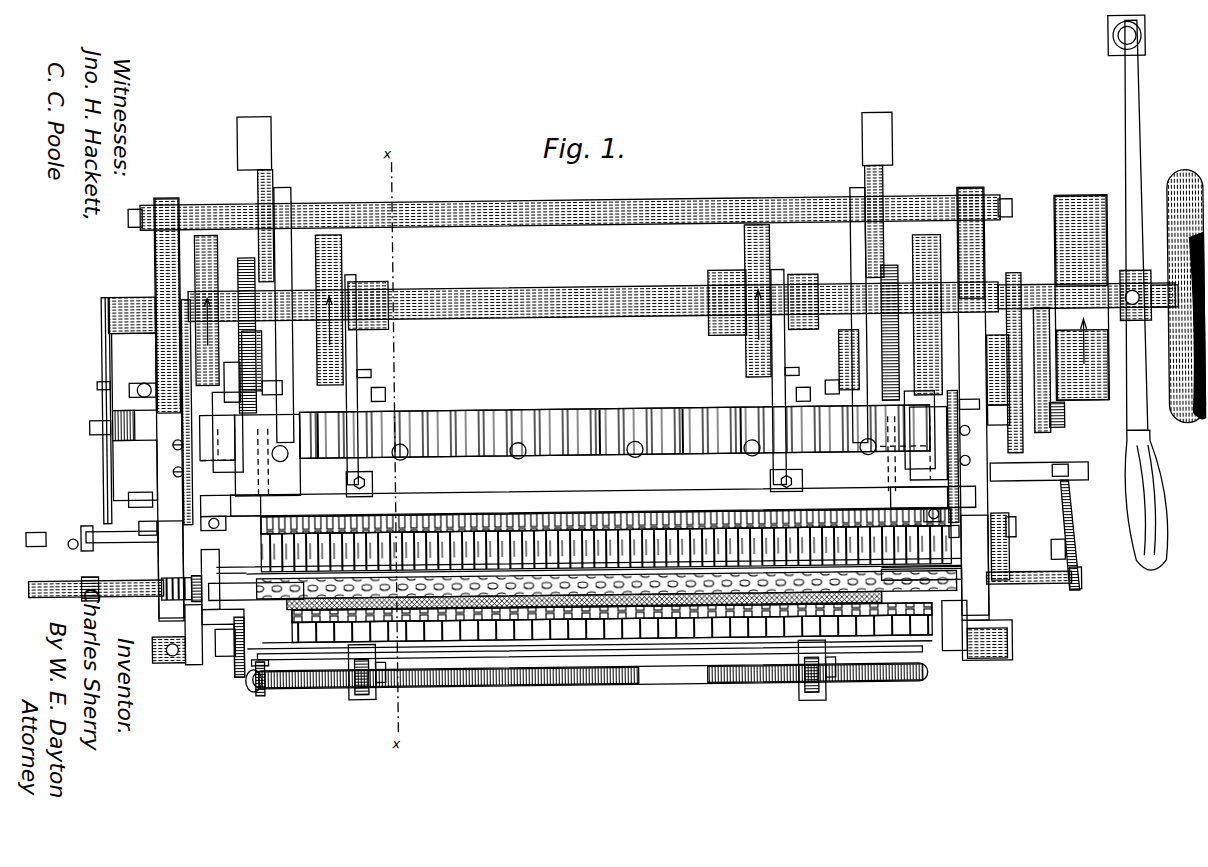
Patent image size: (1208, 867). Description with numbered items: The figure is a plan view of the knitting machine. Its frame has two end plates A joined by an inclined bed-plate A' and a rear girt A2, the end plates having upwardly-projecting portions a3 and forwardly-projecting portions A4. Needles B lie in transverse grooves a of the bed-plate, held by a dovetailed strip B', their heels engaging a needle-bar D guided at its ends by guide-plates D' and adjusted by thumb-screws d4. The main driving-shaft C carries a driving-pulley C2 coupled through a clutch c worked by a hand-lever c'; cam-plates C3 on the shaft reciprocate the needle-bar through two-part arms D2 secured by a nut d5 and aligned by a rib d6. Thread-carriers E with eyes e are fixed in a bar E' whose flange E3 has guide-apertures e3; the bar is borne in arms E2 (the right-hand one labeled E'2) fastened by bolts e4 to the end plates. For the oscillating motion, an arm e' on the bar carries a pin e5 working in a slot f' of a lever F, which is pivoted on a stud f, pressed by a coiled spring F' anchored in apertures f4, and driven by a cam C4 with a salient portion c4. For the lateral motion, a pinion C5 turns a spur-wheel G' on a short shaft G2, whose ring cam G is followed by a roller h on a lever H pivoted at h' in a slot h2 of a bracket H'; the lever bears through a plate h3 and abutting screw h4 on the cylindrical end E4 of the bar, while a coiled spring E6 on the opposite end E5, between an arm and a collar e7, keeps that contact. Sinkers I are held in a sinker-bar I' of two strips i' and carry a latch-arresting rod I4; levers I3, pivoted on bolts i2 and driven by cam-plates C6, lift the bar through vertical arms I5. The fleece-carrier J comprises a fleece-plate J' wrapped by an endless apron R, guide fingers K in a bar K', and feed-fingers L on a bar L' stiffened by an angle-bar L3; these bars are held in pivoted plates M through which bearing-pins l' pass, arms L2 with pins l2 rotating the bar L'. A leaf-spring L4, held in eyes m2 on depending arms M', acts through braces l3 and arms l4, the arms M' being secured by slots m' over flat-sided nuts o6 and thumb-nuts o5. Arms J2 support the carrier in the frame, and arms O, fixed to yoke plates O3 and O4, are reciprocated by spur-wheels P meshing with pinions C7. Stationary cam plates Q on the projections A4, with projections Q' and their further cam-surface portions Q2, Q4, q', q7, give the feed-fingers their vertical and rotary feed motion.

The end plates A is at (571, 408).
The bed-plate A' is at (614, 414).
The girt A2 is at (600, 208).
The forwardly-projecting portions of end plates A4 is at (528, 568).
The needles B is at (658, 551).
The strip B' is at (140, 499).
The main driving-shaft C is at (542, 296).
The driving-pulley C2 is at (1081, 298).
The cam-plates C3 is at (340, 272).
The cam C4 is at (120, 292).
The pinion C5 is at (1015, 277).
The cam-plates C6 is at (216, 296).
The pinions C7 is at (248, 271).
The clutch device c is at (1131, 285).
The hand-lever c' is at (1158, 292).
The salient portion of cam c4 is at (150, 515).
The needle-bar D is at (631, 466).
The guide-plates D' is at (574, 453).
The arms D2 is at (360, 357).
The thumb-screws d4 is at (885, 464).
The nut d5 is at (386, 393).
The rib d6 is at (372, 371).
The thread-carriers E is at (588, 561).
The bar E' is at (592, 550).
The block E'2 is at (1010, 546).
The arms E2 is at (63, 559).
The flange E3 is at (587, 589).
The projecting end of bar E4 is at (1029, 586).
The opposite end of bar E5 is at (110, 590).
The coiled spring E6 is at (172, 597).
The eyes e is at (648, 549).
The arm e' is at (92, 553).
The guide-apertures e3 is at (358, 576).
The bolts e4 is at (1016, 516).
The pin e5 is at (67, 541).
The collar e7 is at (210, 568).
The lever F is at (89, 411).
The coiled spring F' is at (134, 455).
The stud f is at (89, 431).
The slot f' is at (70, 553).
The apertures f4 is at (100, 383).
The cam G is at (1040, 369).
The spur-wheel G' is at (998, 370).
The short shaft G2 is at (998, 415).
The lever H is at (1076, 535).
The bracket H' is at (1039, 471).
The roller h is at (1063, 414).
The pivot h' is at (1081, 445).
The slot h2 is at (1070, 470).
The plate h3 is at (1053, 549).
The abutting screw h4 is at (1087, 577).
The sinkers I is at (602, 497).
The sinker-bar I' is at (605, 507).
The levers I3 is at (195, 440).
The rod I4 is at (723, 508).
The vertical arms I5 is at (574, 509).
The strips i' is at (515, 494).
The pivot-bolts i2 is at (230, 368).
The fleece-carrier J is at (391, 641).
The fleece-plate J' is at (589, 628).
The arms J2 is at (584, 583).
The guide fingers K is at (597, 640).
The bar K' is at (612, 624).
The feed-fingers L is at (572, 655).
The bar L' is at (589, 658).
The arms L2 is at (230, 658).
The angle-bar L3 is at (602, 654).
The leaf-spring L4 is at (590, 675).
The bearing-pins l' is at (591, 659).
The pins l2 is at (603, 594).
The braces l3 is at (350, 698).
The arms l4 is at (372, 680).
The plates M is at (603, 646).
The depending arms M' is at (852, 698).
The slots m' is at (257, 686).
The eyes m2 is at (584, 701).
The arms O is at (278, 374).
The yoke plate O3 is at (561, 392).
The yoke plate O4 is at (566, 235).
The thumb-nuts o5 is at (572, 315).
The nuts o6 is at (620, 672).
The spur-wheels P is at (573, 431).
The plates Q is at (580, 566).
The projections Q' is at (188, 651).
The arm Q2 is at (975, 674).
The block Q4 is at (1010, 660).
The gear q' is at (562, 657).
The gear q7 is at (1005, 645).
The endless apron R is at (455, 680).
The transverse grooves a is at (526, 419).
The upwardly-projecting portions of end plates a3 is at (160, 380).